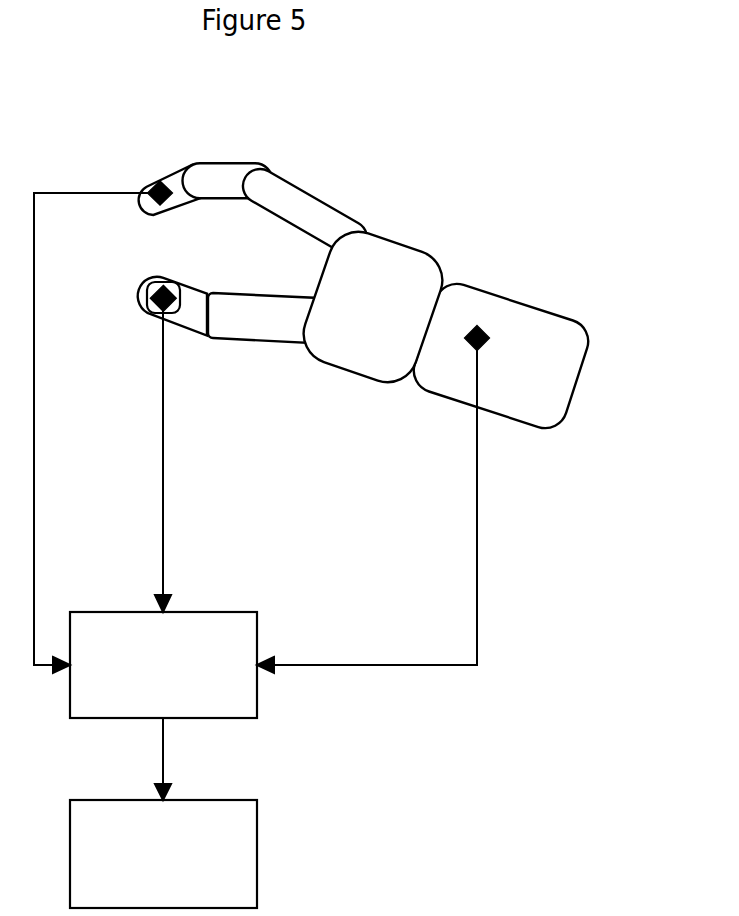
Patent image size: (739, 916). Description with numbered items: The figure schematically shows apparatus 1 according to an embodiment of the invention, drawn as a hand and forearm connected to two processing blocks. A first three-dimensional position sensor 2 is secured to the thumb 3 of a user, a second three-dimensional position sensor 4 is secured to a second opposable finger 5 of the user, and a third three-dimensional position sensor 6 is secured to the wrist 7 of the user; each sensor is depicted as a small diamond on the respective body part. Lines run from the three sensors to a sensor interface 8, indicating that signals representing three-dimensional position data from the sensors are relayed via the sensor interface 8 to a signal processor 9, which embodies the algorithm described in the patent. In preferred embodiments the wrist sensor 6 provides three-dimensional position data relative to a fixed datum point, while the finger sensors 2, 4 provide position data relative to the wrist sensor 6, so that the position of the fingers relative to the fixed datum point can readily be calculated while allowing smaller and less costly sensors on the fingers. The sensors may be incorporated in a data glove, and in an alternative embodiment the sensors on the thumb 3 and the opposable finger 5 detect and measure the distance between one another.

The apparatus 1 is at (381, 264).
The first three-dimensional position sensor 2 is at (147, 185).
The thumb 3 is at (227, 175).
The second three-dimensional position sensor 4 is at (150, 300).
The second opposable finger 5 is at (188, 327).
The third three-dimensional position sensor 6 is at (487, 327).
The wrist 7 is at (427, 375).
The sensor interface 8 is at (227, 638).
The signal processor 9 is at (240, 826).